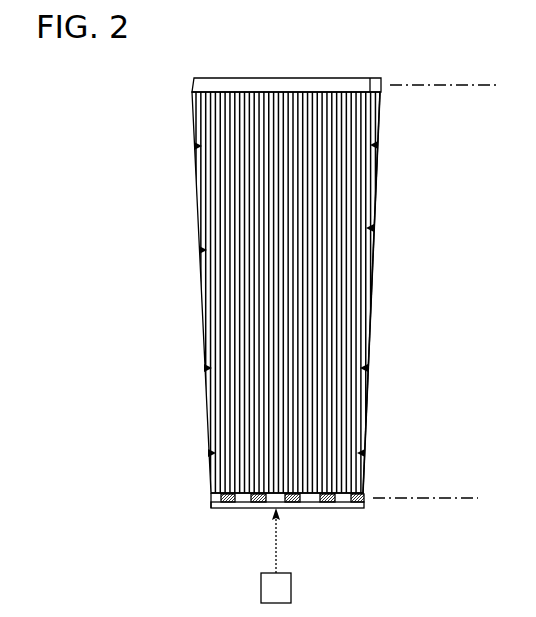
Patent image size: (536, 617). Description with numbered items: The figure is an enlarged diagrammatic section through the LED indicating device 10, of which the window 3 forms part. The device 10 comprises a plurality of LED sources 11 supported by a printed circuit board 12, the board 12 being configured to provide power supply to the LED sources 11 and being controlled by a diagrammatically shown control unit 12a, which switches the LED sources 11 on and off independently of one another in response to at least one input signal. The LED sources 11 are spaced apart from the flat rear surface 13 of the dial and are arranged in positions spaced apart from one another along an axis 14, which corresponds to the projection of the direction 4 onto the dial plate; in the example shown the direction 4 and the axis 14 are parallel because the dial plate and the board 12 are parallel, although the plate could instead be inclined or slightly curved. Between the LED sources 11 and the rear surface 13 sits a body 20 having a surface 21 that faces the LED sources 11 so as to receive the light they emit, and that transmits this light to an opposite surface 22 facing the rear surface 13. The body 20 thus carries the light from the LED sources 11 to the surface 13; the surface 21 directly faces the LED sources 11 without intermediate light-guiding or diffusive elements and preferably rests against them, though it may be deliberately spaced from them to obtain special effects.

The window 3 is at (255, 72).
The direction 4 is at (430, 76).
The LED indicating device 10 is at (370, 199).
The LED sources 11 is at (247, 498).
The printed circuit board 12 is at (349, 498).
The control unit 12a is at (258, 578).
The flat rear surface 13 is at (362, 87).
The axis 14 is at (437, 490).
The body 20 is at (366, 296).
The surface 21 is at (205, 489).
The opposite surface 22 is at (354, 83).